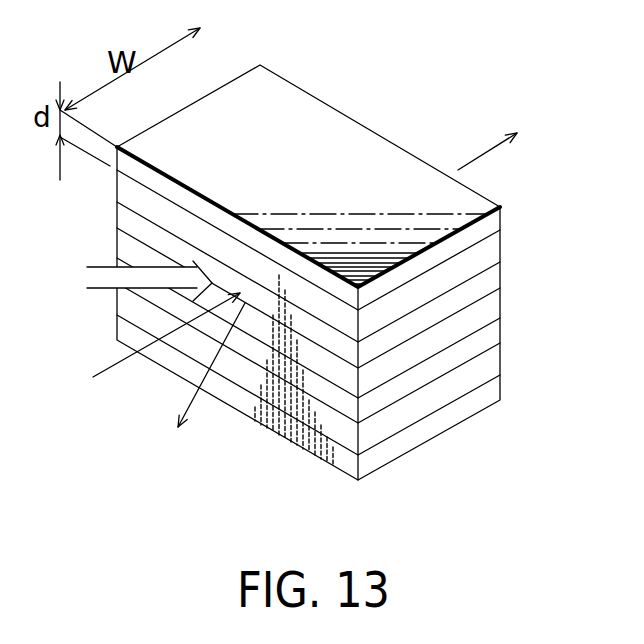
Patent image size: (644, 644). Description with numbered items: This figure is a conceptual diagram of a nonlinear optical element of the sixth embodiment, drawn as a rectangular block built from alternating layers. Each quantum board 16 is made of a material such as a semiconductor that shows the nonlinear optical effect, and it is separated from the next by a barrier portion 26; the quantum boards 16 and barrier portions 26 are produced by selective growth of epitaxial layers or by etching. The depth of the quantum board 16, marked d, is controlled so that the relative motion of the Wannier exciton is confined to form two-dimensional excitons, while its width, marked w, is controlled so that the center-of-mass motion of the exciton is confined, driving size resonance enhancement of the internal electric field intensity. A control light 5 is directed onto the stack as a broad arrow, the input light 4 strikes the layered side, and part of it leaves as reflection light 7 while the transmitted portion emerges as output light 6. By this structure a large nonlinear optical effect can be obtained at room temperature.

The input light 4 is at (136, 352).
The control light 5 is at (101, 266).
The output light 6 is at (470, 162).
The reflection light 7 is at (198, 394).
The quantum board 16 is at (503, 220).
The barrier portion 26 is at (503, 250).